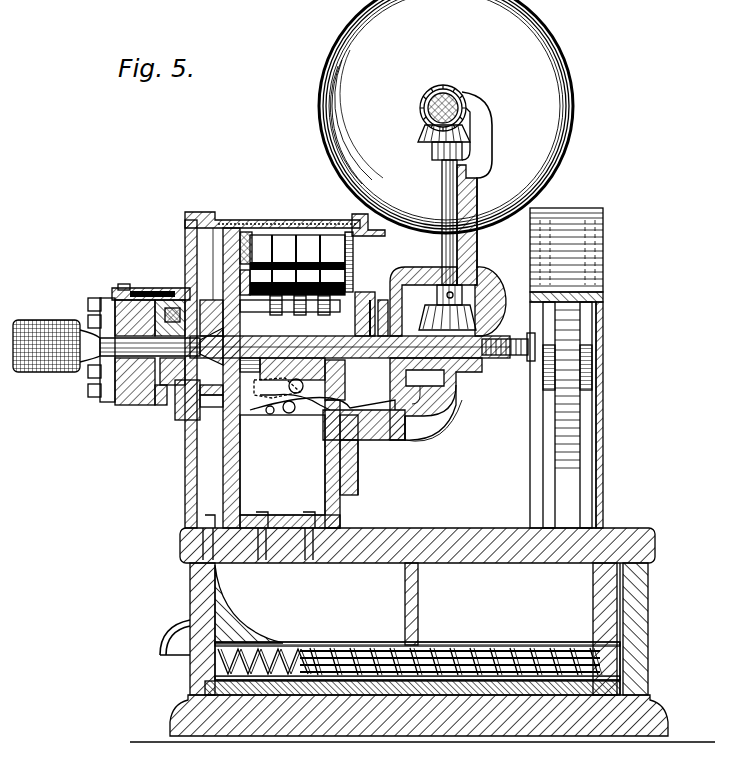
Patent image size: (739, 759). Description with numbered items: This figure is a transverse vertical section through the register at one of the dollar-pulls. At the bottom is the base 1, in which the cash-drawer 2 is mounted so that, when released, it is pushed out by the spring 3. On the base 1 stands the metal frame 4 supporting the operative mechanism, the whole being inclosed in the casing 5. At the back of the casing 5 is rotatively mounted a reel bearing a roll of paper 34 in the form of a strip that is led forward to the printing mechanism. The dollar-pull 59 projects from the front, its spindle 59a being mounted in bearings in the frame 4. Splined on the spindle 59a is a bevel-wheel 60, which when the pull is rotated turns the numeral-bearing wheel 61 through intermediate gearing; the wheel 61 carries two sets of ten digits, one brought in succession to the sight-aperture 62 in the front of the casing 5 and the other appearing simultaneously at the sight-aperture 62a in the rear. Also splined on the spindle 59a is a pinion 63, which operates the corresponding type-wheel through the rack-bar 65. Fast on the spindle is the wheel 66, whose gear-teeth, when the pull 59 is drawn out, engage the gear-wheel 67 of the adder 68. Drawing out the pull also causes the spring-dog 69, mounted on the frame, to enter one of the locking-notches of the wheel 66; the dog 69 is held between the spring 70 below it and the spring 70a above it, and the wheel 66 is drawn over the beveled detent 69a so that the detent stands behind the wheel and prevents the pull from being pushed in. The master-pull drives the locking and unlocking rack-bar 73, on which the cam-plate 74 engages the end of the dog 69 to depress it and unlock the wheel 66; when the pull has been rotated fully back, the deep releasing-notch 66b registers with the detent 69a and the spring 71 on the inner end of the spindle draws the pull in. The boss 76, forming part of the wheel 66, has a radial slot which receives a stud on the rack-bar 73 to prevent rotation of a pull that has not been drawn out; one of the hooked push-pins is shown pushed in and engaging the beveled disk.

The base 1 is at (637, 604).
The cash-drawer 2 is at (236, 593).
The spring 3 is at (507, 645).
The metal frame 4 is at (282, 465).
The casing 5 is at (320, 152).
The roll of paper 34 is at (566, 368).
The dollar-pull 59 is at (40, 320).
The spindle of the dollar-pull 59a is at (305, 341).
The bevel-wheel 60 is at (428, 321).
The numeral-bearing wheel 61 is at (479, 185).
The sight-aperture 62 is at (318, 113).
The sight-aperture 62a is at (571, 93).
The pinion 63 is at (282, 370).
The rack-bar 65 is at (213, 300).
The wheel 66 is at (380, 300).
The releasing-notch 66b is at (413, 428).
The gear-wheel of the adder 67 is at (350, 292).
The adder 68 is at (300, 232).
The spring-dog 69 is at (378, 432).
The beveled detent 69a is at (362, 446).
The spring 70 is at (322, 418).
The spring 70a is at (278, 395).
The spring 71 is at (488, 352).
The locking and unlocking rack-bar 73 is at (408, 398).
The cam-plate 74 is at (440, 424).
The boss 76 is at (372, 315).